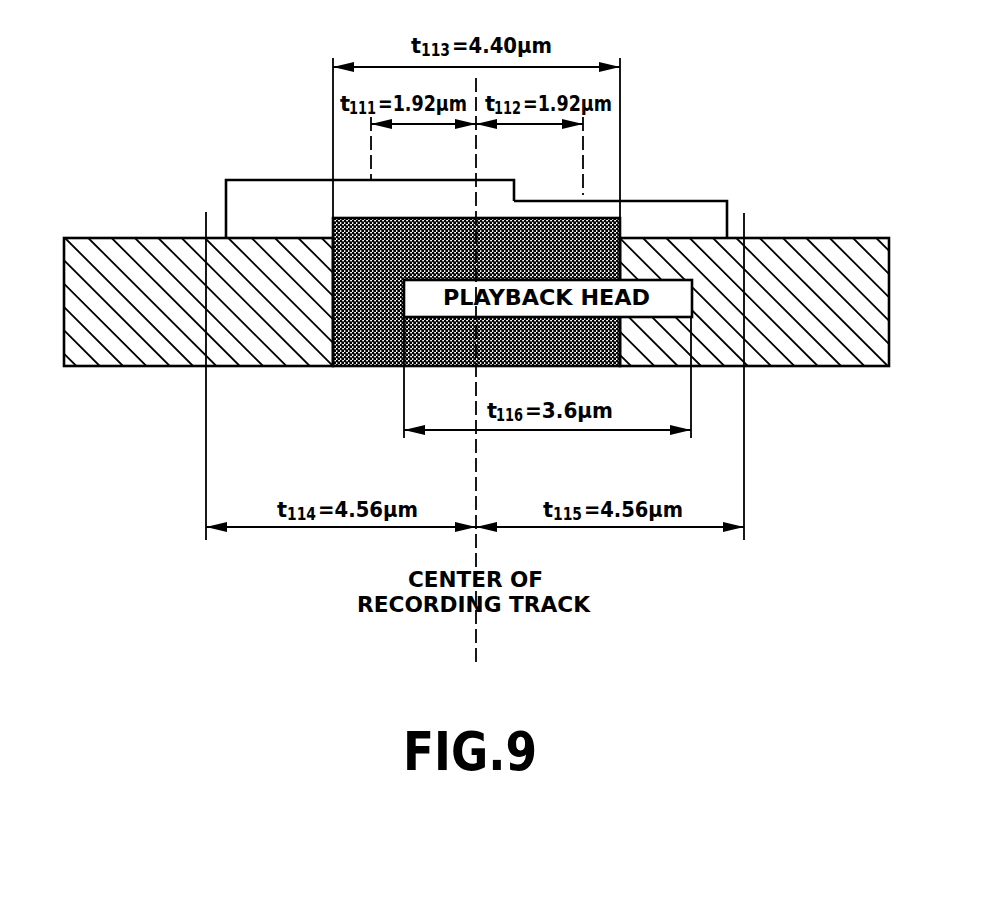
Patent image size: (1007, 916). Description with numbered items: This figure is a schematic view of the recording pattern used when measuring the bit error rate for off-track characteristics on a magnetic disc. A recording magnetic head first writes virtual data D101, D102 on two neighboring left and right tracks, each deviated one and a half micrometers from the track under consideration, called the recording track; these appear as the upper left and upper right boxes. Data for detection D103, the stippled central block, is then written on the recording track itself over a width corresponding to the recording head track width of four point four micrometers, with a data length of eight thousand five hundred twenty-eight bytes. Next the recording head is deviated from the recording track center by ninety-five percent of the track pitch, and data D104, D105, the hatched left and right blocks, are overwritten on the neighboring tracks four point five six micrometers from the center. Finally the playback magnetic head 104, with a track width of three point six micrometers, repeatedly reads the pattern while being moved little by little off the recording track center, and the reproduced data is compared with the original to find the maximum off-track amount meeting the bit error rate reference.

The playback magnetic head 104 is at (476, 306).
The virtual data D101 is at (370, 209).
The virtual data D102 is at (620, 219).
The data for detection D103 is at (476, 292).
The overwritten data D104 is at (225, 302).
The overwritten data D105 is at (753, 302).